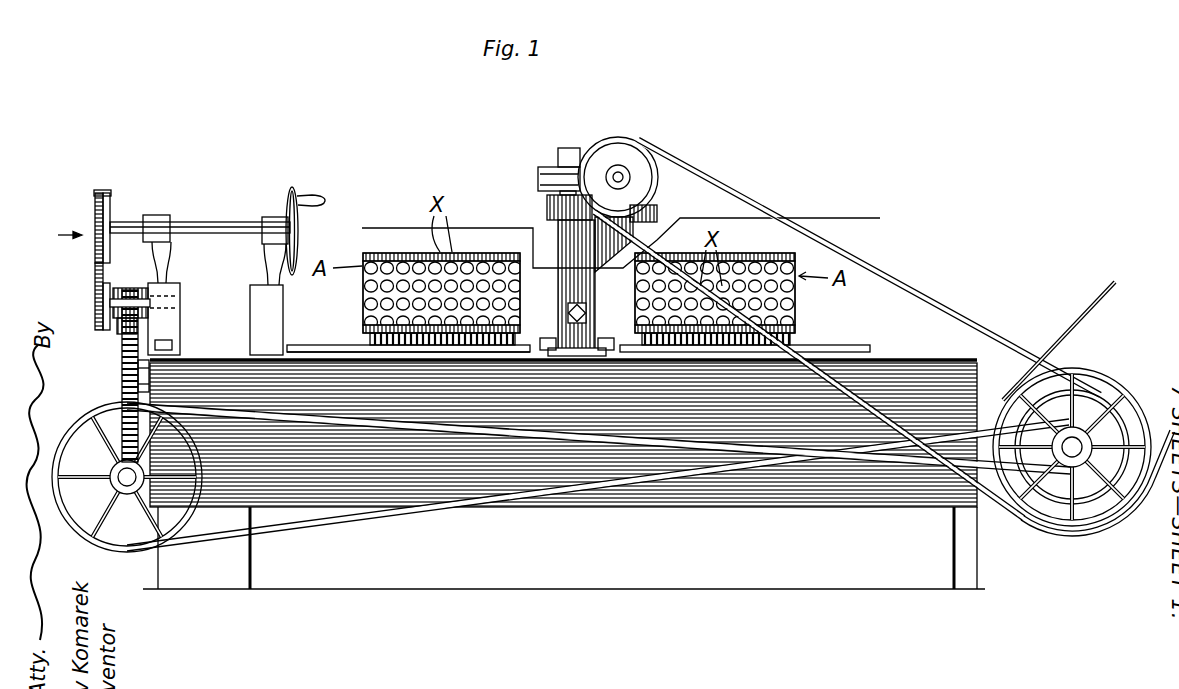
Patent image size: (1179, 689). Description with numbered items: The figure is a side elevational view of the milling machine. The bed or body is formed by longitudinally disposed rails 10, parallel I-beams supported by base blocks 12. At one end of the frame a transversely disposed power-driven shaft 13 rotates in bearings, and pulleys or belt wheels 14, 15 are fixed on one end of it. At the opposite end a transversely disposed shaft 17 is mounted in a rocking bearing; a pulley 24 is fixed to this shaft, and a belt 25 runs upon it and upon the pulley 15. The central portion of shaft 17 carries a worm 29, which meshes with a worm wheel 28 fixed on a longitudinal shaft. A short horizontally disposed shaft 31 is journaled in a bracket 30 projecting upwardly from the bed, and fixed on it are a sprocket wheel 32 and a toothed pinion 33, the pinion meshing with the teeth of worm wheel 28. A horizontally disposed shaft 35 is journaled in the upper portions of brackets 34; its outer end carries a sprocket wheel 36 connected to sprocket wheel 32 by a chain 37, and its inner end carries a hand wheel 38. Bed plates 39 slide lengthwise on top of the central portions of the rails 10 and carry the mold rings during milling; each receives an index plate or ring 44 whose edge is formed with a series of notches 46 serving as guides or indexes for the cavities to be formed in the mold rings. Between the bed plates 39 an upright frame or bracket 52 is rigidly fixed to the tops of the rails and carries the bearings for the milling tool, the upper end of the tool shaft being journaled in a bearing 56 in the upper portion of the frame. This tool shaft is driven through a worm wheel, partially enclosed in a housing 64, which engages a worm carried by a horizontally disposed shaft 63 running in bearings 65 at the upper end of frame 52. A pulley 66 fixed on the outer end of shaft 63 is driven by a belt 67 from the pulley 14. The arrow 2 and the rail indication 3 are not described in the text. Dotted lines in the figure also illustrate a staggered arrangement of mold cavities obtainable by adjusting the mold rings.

The direction arrow 2 is at (61, 238).
The rail 3 is at (618, 241).
The longitudinally disposed rails 10 is at (750, 500).
The base blocks 12 is at (564, 548).
The power-driven shaft 13 is at (1075, 443).
The pulley 14 is at (1088, 508).
The pulley 15 is at (1122, 414).
The shaft 17 is at (138, 474).
The pulley 24 is at (198, 483).
The belt 25 is at (497, 507).
The worm wheel 28 is at (122, 377).
The worm 29 is at (111, 485).
The bracket 30 is at (181, 332).
The short horizontally disposed shaft 31 is at (146, 288).
The sprocket wheel 32 is at (95, 300).
The toothed pinion 33 is at (118, 327).
The brackets 34 is at (167, 218).
The horizontally disposed shaft 35 is at (223, 234).
The sprocket wheel 36 is at (95, 212).
The chain 37 is at (102, 190).
The hand wheel 38 is at (295, 190).
The bed plates 39 is at (300, 344).
The index plate or ring 44 is at (370, 343).
The notches 46 is at (528, 340).
The upright frame or bracket 52 is at (566, 293).
The bearing 56 is at (547, 198).
The horizontally disposed shaft 63 is at (620, 172).
The housing 64 is at (549, 170).
The bearings 65 is at (657, 215).
The pulley 66 is at (655, 160).
The belt 67 is at (942, 300).